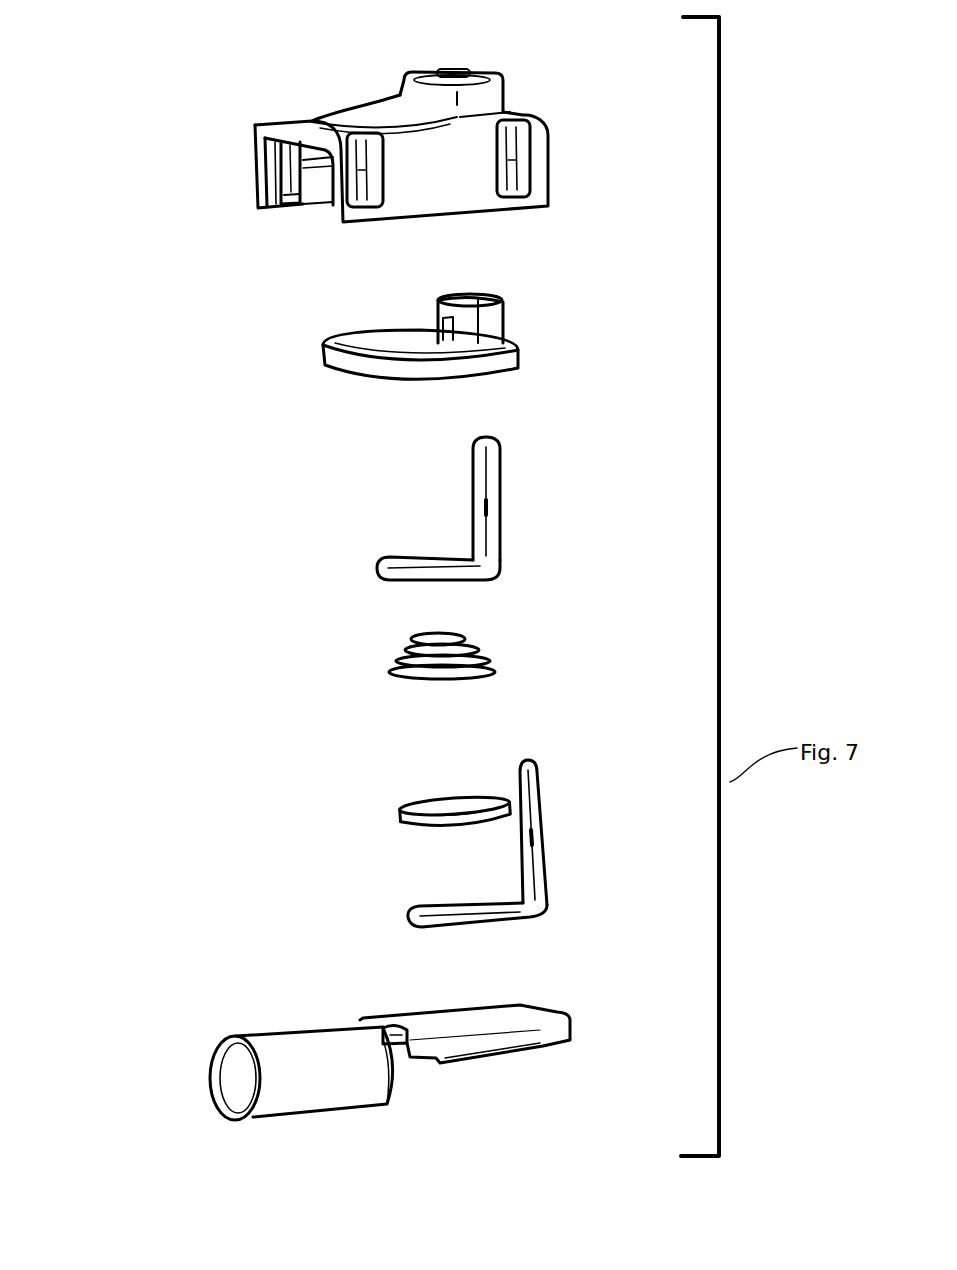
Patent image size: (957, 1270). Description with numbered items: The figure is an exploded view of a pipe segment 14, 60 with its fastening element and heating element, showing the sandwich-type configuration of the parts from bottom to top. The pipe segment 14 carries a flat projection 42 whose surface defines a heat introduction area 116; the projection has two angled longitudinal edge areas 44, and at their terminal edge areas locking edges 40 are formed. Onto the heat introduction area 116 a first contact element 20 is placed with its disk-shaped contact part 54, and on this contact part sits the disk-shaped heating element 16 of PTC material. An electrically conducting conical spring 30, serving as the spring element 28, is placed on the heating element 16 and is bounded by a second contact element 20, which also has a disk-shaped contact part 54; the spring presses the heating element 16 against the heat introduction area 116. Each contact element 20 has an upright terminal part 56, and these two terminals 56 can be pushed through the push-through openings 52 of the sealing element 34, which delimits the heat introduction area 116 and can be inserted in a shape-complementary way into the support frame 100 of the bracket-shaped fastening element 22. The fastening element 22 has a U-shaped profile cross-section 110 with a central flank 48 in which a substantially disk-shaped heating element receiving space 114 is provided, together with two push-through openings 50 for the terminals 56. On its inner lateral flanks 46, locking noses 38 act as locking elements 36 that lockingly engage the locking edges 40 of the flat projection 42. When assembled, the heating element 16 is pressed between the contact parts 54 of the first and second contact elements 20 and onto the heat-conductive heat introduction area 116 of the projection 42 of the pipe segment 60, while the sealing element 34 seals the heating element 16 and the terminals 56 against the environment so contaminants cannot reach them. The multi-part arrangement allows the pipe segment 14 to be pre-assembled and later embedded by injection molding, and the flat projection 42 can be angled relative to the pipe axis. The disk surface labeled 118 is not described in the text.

The pipe segment 14 is at (351, 1043).
The heating element 16 is at (398, 815).
The contact element 20 is at (505, 500).
The fastening element 22 is at (548, 125).
The spring element 28 is at (502, 656).
The conical spring 30 is at (485, 662).
The sealing element 34 is at (523, 347).
The locking element 36 is at (211, 179).
The locking nose 38 is at (280, 202).
The locking edge 40 is at (428, 1063).
The flat projection 42 is at (552, 1015).
The angled longitudinal edge area 44 is at (493, 1047).
The inner lateral flank 46 is at (270, 173).
The central flank 48 is at (300, 121).
The push-through opening 50 is at (452, 66).
The push-through opening 52 is at (465, 296).
The contact part 54 is at (428, 565).
The terminal part 56 is at (475, 468).
The pipe segment 60 is at (208, 1058).
The support frame 100 is at (320, 160).
The U-shaped profile cross-section 110 is at (280, 132).
The heating element receiving space 114 is at (375, 101).
The heat introduction area 116 is at (463, 1018).
The disc surface 118 is at (455, 798).